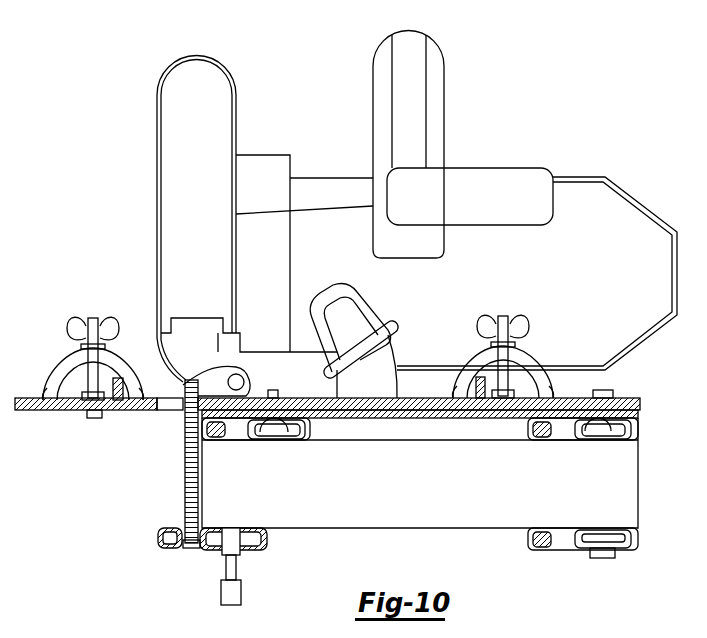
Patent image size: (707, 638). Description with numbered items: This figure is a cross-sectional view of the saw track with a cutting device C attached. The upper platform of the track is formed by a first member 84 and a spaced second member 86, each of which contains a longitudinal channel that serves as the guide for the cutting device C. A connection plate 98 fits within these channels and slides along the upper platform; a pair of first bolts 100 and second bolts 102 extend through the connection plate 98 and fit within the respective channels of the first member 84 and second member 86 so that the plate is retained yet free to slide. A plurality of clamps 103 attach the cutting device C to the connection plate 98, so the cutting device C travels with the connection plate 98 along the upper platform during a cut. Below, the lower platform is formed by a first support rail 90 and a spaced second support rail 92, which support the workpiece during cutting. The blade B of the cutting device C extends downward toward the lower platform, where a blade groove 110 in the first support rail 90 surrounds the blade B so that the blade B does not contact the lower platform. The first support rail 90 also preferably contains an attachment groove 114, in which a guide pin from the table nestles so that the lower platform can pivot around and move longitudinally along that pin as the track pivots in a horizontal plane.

The cutting device C is at (625, 217).
The blade B is at (183, 462).
The clamps 103 is at (53, 382).
The connection plate 98 is at (640, 407).
The first member 84 is at (419, 509).
The second member 86 is at (280, 449).
The first bolts 100 is at (275, 434).
The second bolts 102 is at (600, 434).
The first support rail 90 is at (573, 550).
The blade groove 110 is at (189, 550).
The second support rail 92 is at (205, 552).
The attachment groove 114 is at (262, 543).